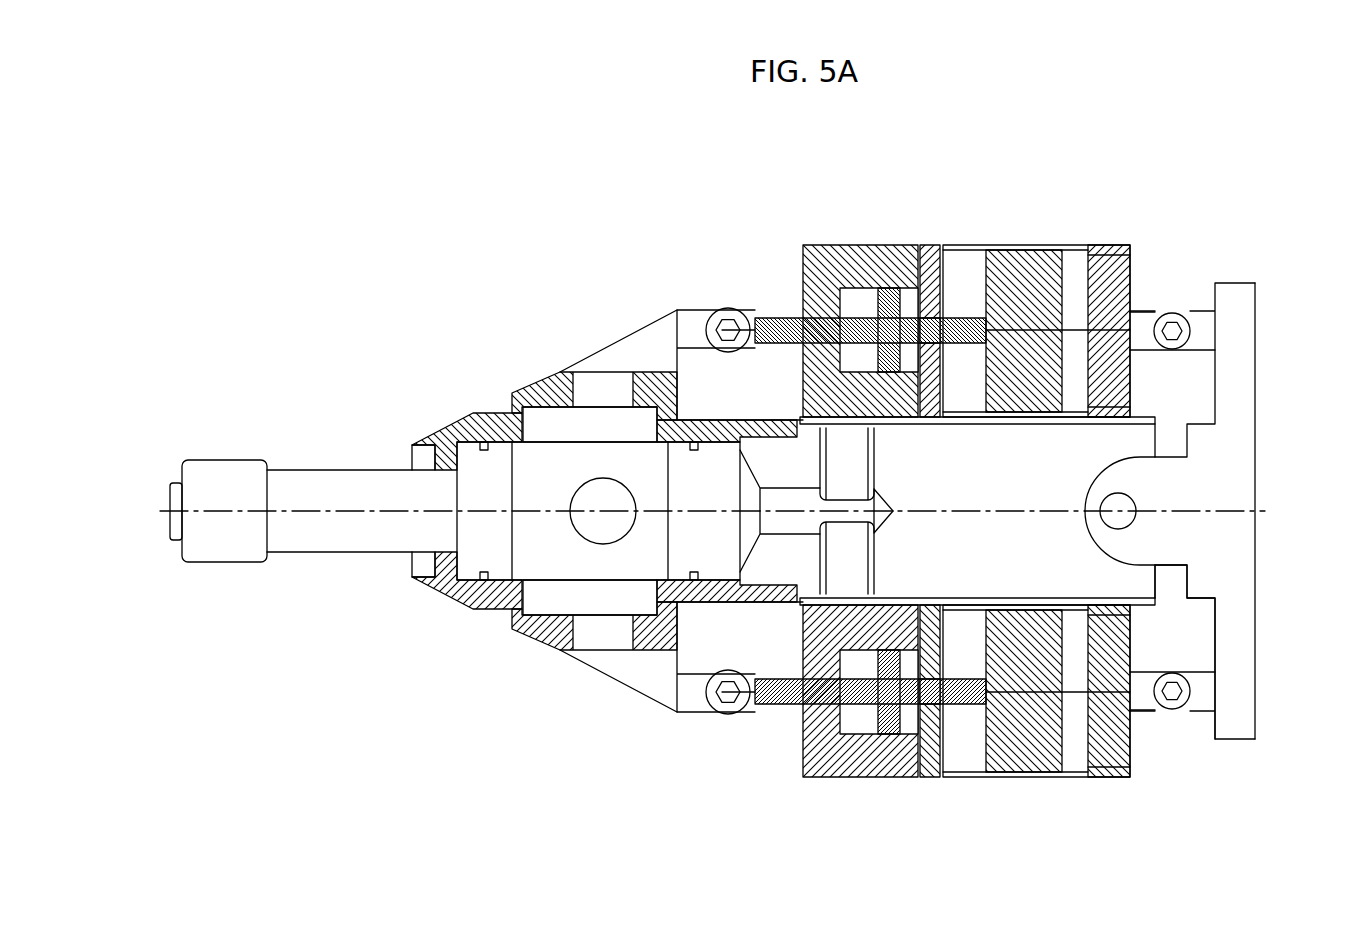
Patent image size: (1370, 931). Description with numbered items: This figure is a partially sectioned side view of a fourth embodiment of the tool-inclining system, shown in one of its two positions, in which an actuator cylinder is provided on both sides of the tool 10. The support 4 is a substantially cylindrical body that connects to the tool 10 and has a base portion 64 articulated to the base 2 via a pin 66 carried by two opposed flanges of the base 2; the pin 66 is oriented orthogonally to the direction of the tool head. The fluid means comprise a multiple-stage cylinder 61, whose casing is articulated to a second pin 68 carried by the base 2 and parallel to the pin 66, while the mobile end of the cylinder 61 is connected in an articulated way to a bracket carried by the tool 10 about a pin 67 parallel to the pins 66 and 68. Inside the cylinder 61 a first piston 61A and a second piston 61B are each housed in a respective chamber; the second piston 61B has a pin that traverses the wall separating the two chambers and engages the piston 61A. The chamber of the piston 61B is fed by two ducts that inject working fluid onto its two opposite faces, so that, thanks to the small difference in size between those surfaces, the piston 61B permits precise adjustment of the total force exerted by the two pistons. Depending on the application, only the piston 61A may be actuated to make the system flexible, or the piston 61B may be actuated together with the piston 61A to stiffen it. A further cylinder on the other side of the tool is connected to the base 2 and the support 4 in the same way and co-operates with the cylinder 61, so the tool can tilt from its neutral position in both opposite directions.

The base 2 is at (1252, 600).
The support 4 is at (868, 574).
The tool 10 is at (252, 454).
The multiple-stage cylinder 61 is at (1070, 240).
The first piston 61A is at (858, 325).
The second piston 61B is at (1015, 282).
The base portion 64 is at (1218, 712).
The pin 66 is at (1121, 508).
The pin 67 is at (728, 322).
The second pin 68 is at (1175, 322).